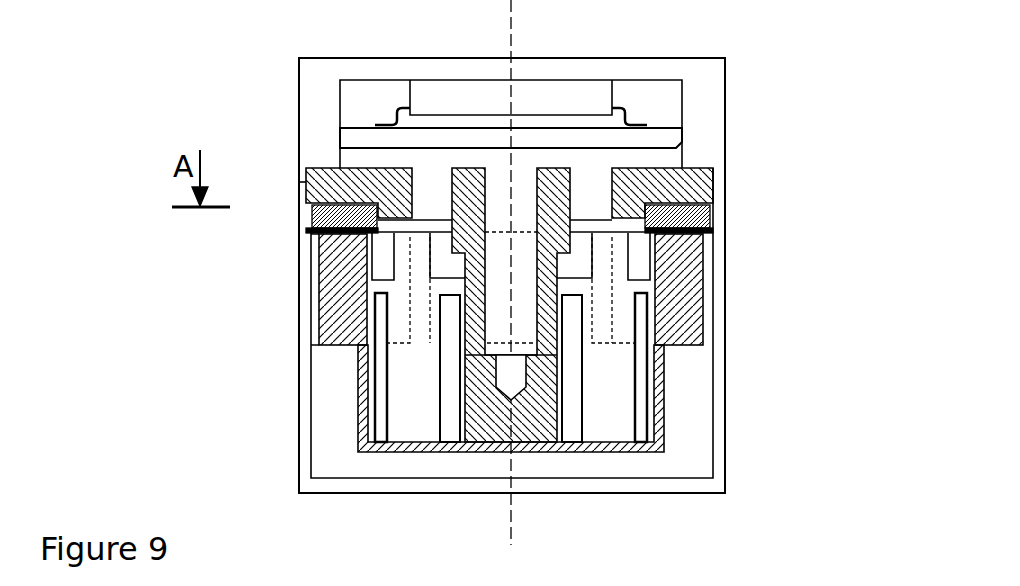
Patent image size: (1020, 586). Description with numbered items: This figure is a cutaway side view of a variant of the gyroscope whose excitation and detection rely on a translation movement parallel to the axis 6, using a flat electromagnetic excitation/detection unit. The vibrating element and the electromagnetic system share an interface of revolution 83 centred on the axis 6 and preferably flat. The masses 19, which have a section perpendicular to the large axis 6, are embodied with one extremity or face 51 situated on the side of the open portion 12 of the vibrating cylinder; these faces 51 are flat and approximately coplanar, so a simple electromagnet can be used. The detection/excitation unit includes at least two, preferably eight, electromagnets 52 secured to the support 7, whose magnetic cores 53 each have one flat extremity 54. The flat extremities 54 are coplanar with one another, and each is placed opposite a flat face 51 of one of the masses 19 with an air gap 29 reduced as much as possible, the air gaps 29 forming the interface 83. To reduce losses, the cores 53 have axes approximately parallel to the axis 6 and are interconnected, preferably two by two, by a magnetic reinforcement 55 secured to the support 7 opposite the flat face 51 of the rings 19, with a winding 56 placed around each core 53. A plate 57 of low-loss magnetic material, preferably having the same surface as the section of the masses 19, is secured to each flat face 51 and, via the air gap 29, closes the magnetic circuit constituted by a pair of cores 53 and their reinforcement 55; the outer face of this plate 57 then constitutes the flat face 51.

The axis 6 is at (516, 44).
The support 7 is at (657, 170).
The open portion of the vibrating cylinder 12 is at (320, 275).
The masses 19 is at (320, 307).
The air gap 29 is at (712, 230).
The flat extremity or face 51 is at (316, 236).
The electromagnets 52 is at (308, 168).
The magnetic cores 53 is at (303, 186).
The flat extremity 54 is at (705, 197).
The magnetic reinforcement 55 is at (700, 185).
The winding 56 is at (365, 175).
The plate 57 is at (710, 235).
The interface of revolution 83 is at (622, 243).